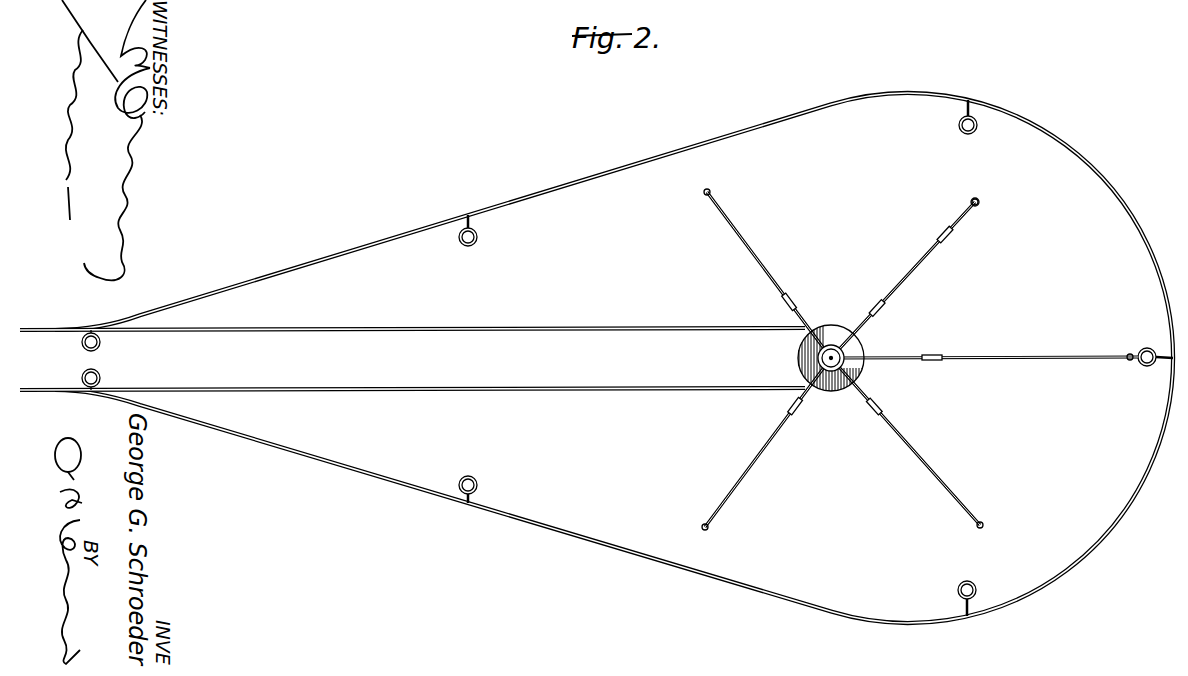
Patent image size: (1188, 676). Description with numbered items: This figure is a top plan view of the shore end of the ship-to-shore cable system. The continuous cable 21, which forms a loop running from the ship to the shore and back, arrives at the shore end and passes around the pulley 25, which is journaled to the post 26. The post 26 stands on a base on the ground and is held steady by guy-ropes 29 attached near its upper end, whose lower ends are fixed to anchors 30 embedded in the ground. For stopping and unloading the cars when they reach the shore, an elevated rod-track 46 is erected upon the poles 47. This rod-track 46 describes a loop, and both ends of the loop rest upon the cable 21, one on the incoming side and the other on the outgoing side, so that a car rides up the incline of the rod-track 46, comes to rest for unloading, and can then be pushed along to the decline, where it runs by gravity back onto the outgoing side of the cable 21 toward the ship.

The cable 21 is at (510, 314).
The pulley 25 is at (858, 344).
The post 26 is at (832, 346).
The guy-ropes 29 is at (772, 271).
The anchors 30 is at (982, 203).
The rod-track 46 is at (1155, 270).
The poles 47 is at (961, 134).